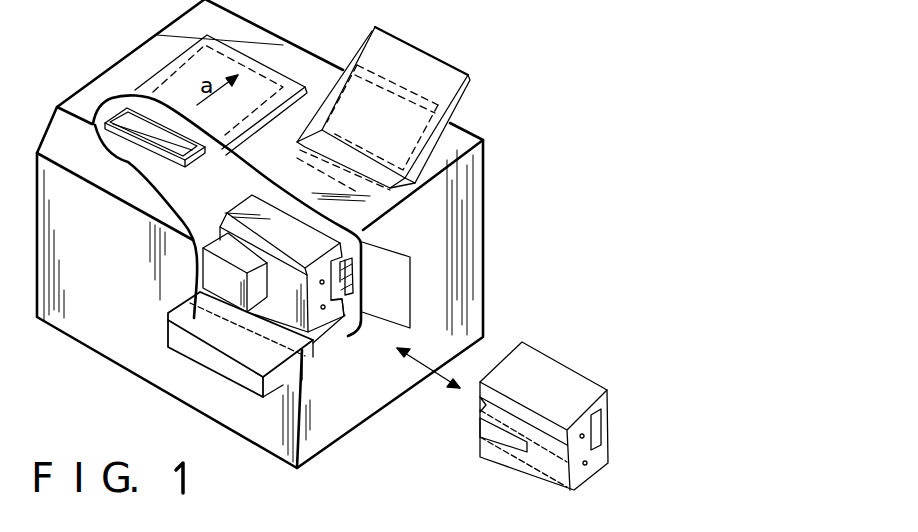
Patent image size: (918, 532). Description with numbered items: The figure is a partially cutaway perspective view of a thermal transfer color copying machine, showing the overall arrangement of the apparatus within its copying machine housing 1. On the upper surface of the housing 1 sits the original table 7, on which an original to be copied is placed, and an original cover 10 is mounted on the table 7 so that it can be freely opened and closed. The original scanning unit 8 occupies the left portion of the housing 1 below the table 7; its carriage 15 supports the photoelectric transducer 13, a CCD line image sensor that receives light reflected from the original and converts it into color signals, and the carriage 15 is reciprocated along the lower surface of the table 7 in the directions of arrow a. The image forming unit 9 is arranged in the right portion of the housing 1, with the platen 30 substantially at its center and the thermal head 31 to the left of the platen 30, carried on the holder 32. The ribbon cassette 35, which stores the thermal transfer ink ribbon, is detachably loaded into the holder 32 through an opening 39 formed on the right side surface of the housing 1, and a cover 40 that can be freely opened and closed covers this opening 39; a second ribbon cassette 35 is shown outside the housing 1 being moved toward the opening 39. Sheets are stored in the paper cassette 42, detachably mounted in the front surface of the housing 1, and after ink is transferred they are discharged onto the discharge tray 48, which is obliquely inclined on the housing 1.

The copying machine housing 1 is at (480, 183).
The original table 7 is at (163, 85).
The original scanning unit 8 is at (127, 161).
The image forming unit 9 is at (281, 348).
The original cover 10 is at (253, 68).
The photoelectric transducer 13 is at (167, 156).
The carriage 15 is at (206, 157).
The platen 30 is at (356, 266).
The thermal head 31 is at (346, 296).
The holder 32 is at (213, 268).
The ribbon cassette 35 is at (263, 203).
The opening 39 is at (323, 337).
The cover 40 is at (405, 302).
The paper cassette 42 is at (180, 338).
The discharge tray 48 is at (447, 75).